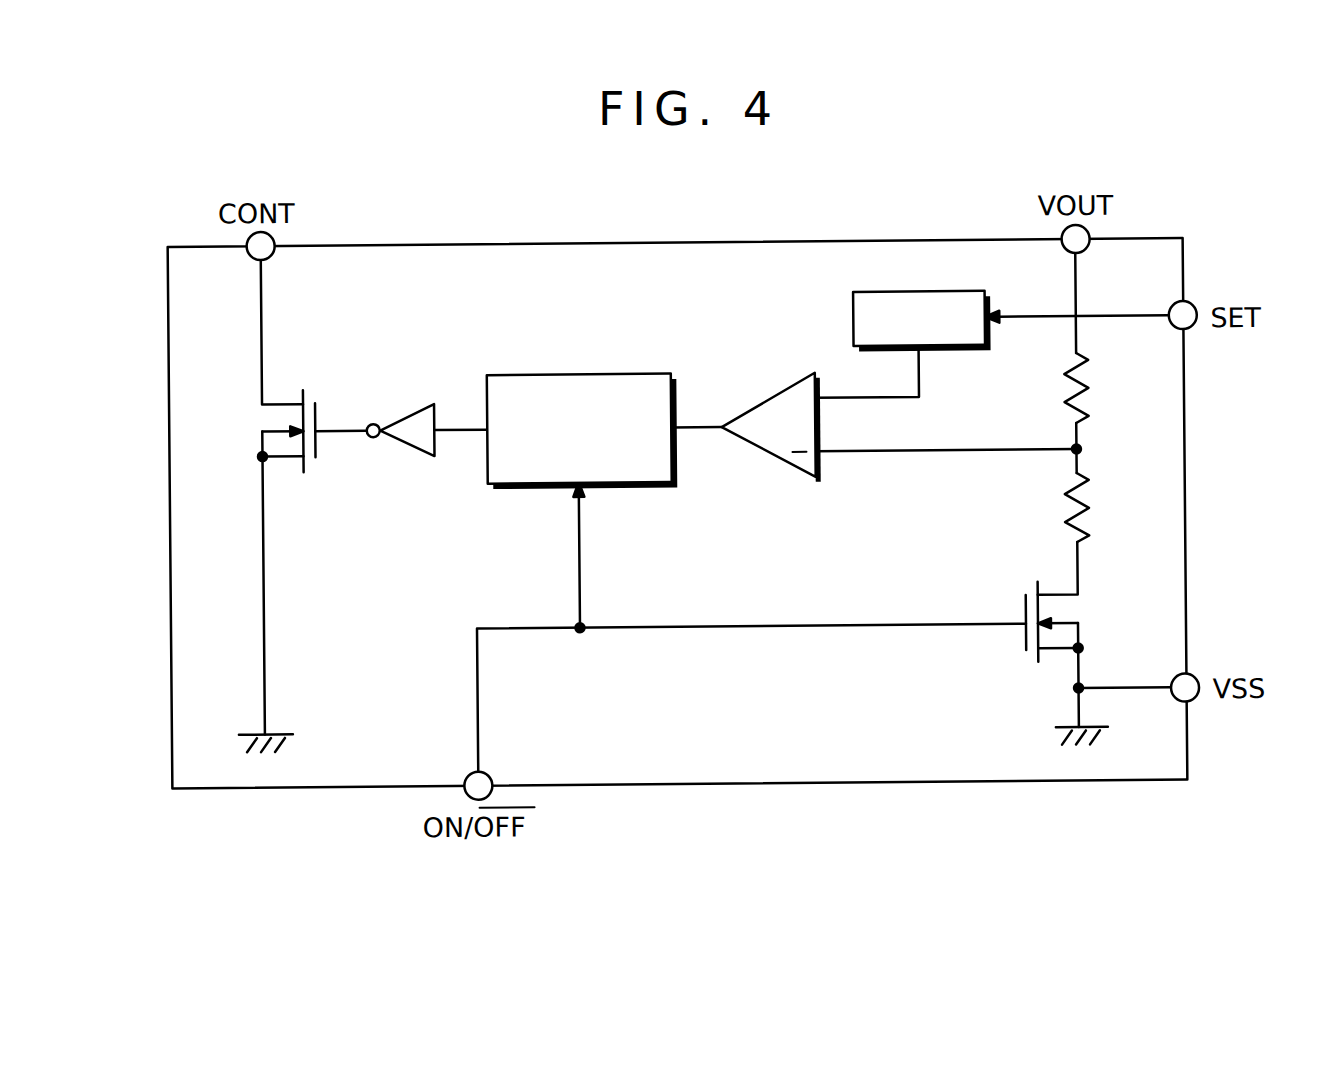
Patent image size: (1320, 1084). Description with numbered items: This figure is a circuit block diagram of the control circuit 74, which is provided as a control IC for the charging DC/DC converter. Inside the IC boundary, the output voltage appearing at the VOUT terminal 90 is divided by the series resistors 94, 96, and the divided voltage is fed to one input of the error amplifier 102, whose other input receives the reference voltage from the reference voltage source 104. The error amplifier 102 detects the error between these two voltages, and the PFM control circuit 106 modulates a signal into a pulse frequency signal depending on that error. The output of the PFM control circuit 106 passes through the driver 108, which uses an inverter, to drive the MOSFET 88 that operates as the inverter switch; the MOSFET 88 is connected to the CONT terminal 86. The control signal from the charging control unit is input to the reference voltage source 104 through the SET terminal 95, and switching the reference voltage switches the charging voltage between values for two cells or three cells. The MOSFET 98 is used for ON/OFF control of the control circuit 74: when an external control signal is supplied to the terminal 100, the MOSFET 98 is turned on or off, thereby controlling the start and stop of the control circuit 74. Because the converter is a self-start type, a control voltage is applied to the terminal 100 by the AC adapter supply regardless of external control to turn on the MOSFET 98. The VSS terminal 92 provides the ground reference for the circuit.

The control circuit 74 is at (697, 242).
The CONT terminal 86 is at (257, 252).
The MOSFET 88 is at (271, 426).
The VOUT terminal 90 is at (1090, 253).
The VSS terminal 92 is at (1195, 710).
The resistor 94 is at (1095, 396).
The SET terminal 95 is at (1194, 334).
The resistor 96 is at (1094, 516).
The MOSFET 98 is at (1085, 622).
The terminal 100 is at (467, 778).
The error amplifier 102 is at (770, 461).
The reference voltage source 104 is at (854, 312).
The PFM control circuit 106 is at (584, 374).
The driver 108 is at (411, 413).